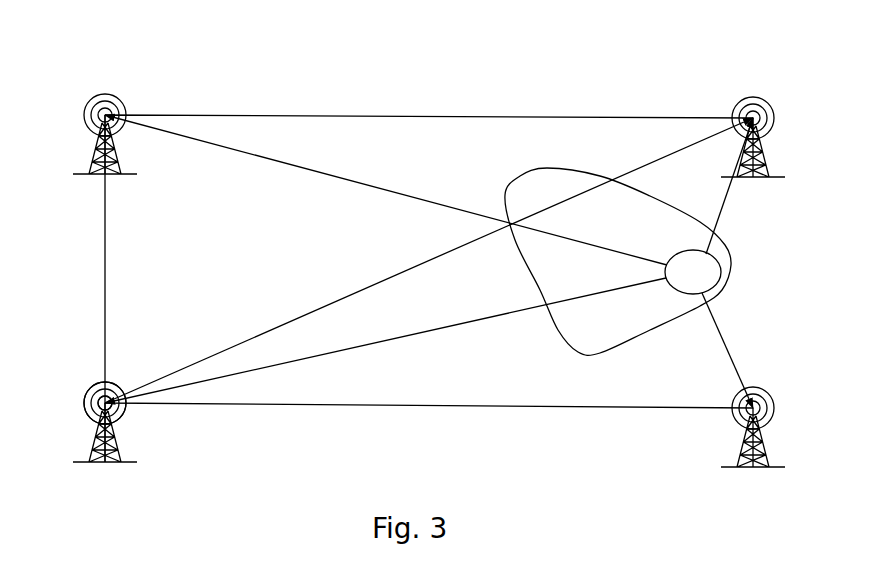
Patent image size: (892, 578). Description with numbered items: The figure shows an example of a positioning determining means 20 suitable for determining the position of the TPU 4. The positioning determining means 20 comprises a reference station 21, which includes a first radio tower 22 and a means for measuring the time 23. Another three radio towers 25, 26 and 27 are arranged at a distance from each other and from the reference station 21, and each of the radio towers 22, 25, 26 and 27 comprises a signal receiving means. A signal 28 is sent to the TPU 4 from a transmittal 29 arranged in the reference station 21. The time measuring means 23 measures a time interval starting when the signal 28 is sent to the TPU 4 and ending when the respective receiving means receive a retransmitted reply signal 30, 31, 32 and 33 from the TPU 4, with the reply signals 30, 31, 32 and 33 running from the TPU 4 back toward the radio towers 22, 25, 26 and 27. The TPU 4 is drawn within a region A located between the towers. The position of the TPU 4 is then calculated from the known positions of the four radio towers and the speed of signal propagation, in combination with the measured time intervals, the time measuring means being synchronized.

The positioning determining means 20 is at (558, 92).
The reference station 21 is at (84, 389).
The first radio tower 22 is at (95, 408).
The means for measuring the time 23 is at (101, 457).
The radio tower 25 is at (92, 117).
The radio tower 26 is at (772, 118).
The radio tower 27 is at (772, 406).
The signal 28 is at (511, 322).
The transmittal 29 is at (107, 400).
The retransmitted reply signal 30 is at (448, 316).
The retransmitted reply signal 31 is at (548, 225).
The retransmitted reply signal 32 is at (738, 196).
The retransmitted reply signal 33 is at (735, 333).
The TPU 4 is at (722, 283).
The coverage area A is at (732, 258).